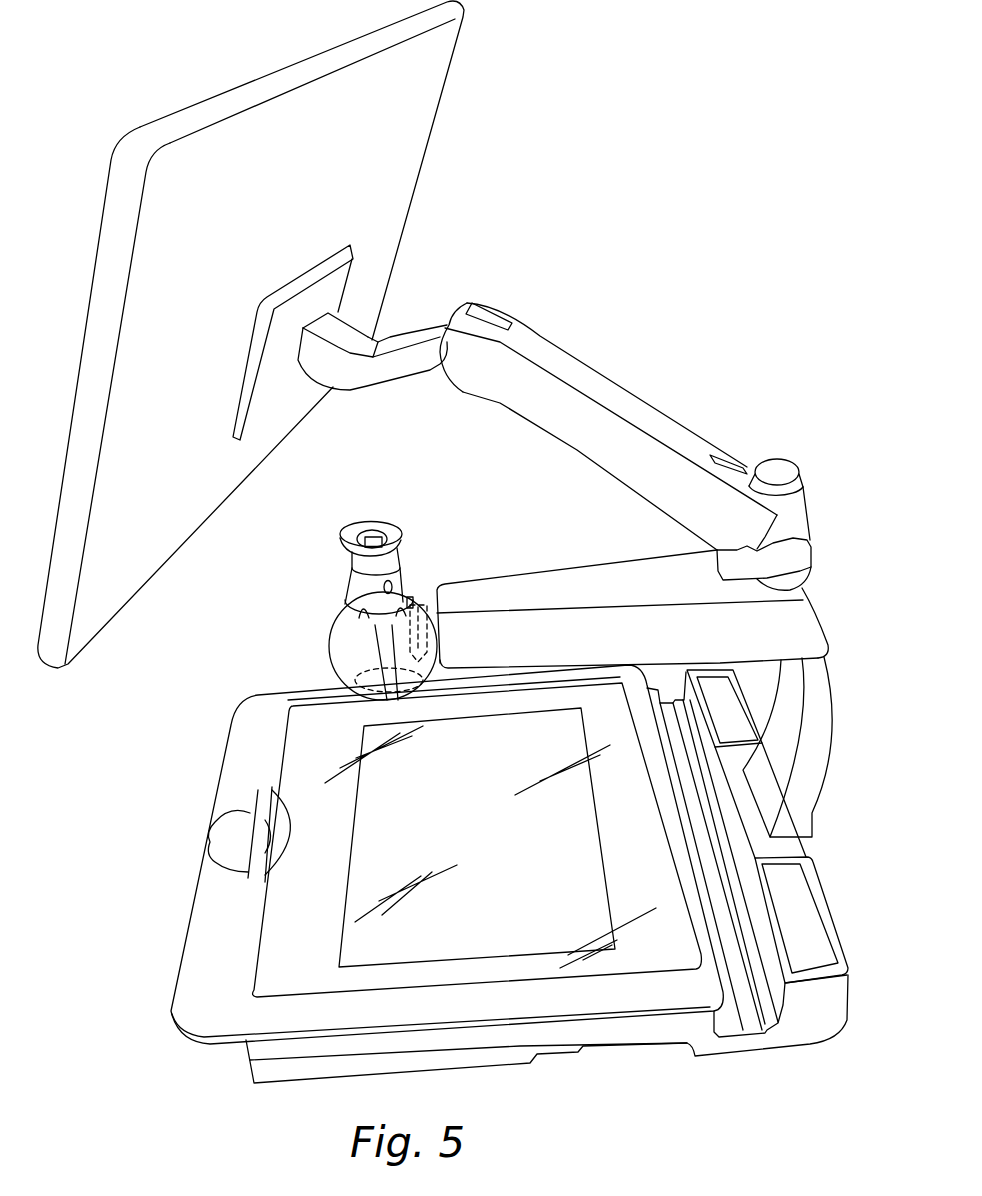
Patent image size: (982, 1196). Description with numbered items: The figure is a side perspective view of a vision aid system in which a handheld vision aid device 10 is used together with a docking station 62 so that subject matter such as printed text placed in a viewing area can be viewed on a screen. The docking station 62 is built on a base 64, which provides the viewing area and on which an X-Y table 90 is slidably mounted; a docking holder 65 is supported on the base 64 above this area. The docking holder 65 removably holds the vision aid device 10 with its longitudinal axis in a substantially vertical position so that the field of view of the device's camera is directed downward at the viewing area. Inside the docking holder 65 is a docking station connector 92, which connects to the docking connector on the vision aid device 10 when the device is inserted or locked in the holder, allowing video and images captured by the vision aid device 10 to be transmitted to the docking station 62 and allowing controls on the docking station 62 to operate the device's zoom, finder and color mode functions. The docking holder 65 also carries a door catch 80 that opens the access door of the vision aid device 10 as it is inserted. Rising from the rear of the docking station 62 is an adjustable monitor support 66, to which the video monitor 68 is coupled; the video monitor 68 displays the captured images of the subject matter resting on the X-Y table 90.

The vision aid device 10 is at (402, 577).
The docking station 62 is at (658, 398).
The base 64 is at (831, 1033).
The docking holder 65 is at (330, 634).
The adjustable monitor support 66 is at (565, 355).
The video monitor 68 is at (430, 125).
The door catch 80 is at (413, 598).
The X-Y table 90 is at (190, 992).
The docking station connector 92 is at (430, 620).